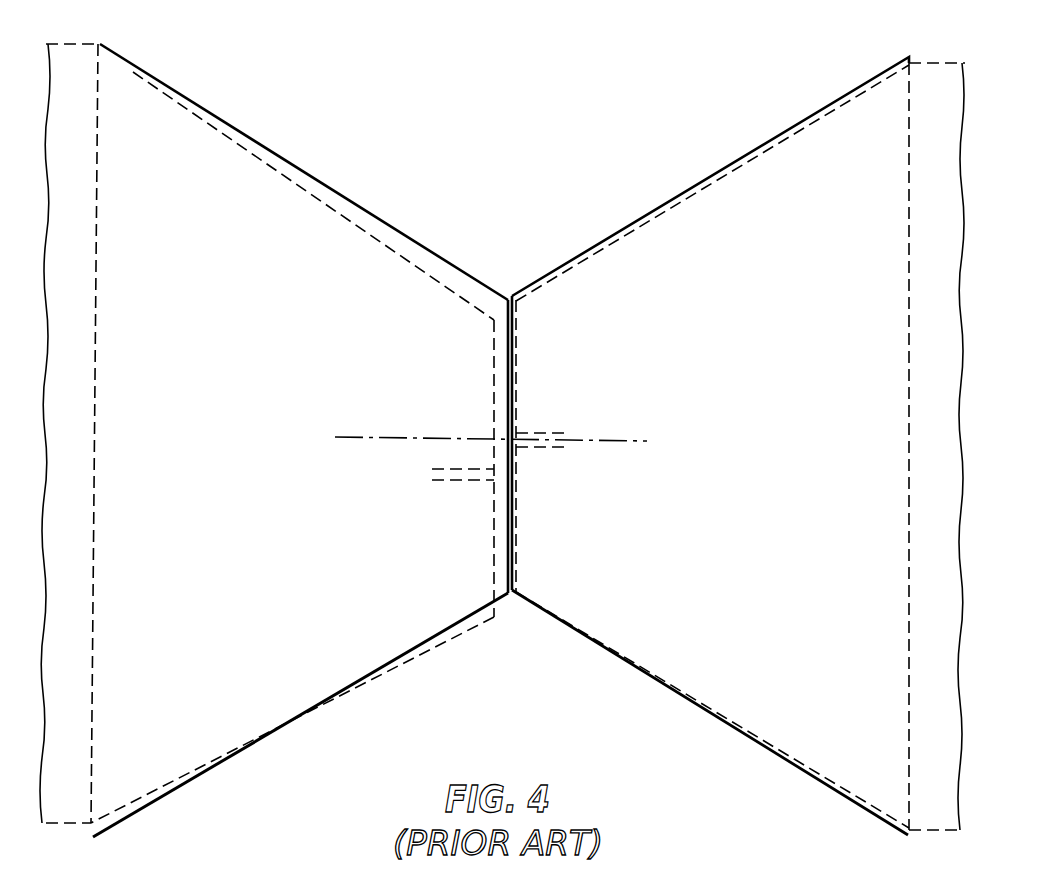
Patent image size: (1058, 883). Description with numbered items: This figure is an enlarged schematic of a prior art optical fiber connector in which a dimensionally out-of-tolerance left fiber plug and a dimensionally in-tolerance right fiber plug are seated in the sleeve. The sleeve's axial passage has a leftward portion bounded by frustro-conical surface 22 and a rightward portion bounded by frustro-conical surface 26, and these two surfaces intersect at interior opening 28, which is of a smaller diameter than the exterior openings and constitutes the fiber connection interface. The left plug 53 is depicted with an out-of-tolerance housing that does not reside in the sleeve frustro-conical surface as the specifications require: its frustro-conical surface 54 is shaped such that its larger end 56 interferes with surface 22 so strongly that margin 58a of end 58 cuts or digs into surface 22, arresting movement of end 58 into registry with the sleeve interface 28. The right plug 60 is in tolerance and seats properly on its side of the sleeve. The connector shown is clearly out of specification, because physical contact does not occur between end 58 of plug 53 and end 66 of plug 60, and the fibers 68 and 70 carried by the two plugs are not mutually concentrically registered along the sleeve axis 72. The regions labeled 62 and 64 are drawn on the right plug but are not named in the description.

The frustro-conical surface 22 is at (466, 617).
The frustro-conical surface 26 is at (670, 686).
The interior opening 28 is at (507, 294).
The plug 53 is at (67, 68).
The frustro-conical surface 54 is at (258, 456).
The larger end 56 is at (96, 333).
The end 58 is at (494, 343).
The margin 58a is at (492, 620).
The plug 60 is at (929, 75).
The right panel 62 is at (772, 463).
The right panel fold line 64 is at (908, 347).
The end 66 is at (516, 381).
The fiber 68 is at (456, 481).
The fiber 70 is at (547, 433).
The sleeve axis 72 is at (600, 443).